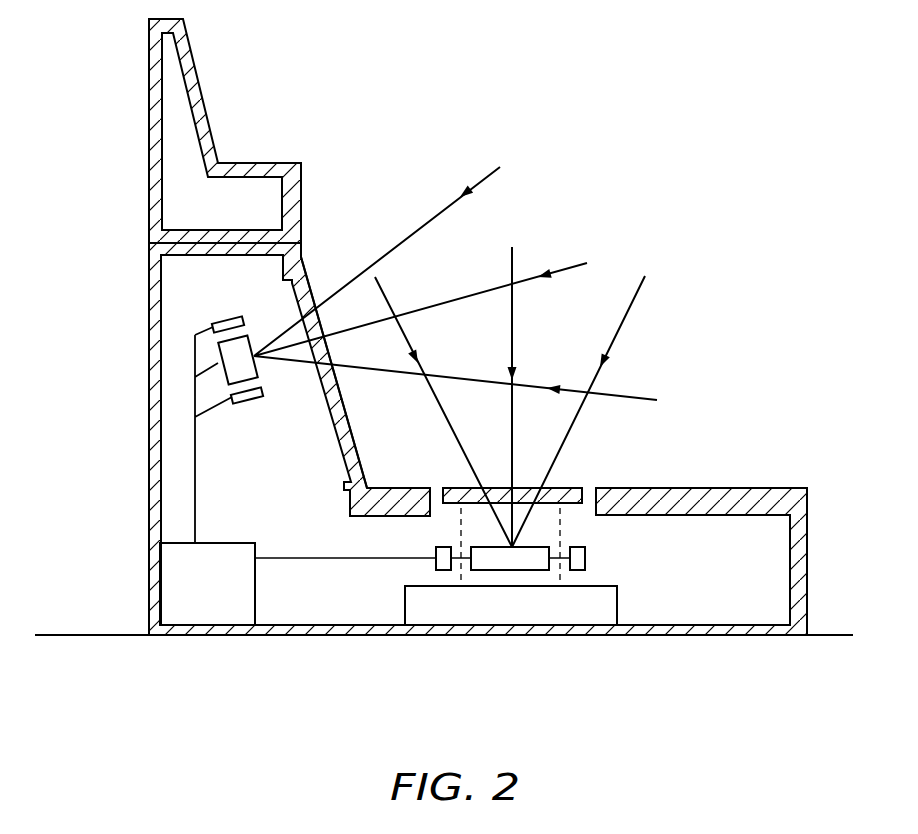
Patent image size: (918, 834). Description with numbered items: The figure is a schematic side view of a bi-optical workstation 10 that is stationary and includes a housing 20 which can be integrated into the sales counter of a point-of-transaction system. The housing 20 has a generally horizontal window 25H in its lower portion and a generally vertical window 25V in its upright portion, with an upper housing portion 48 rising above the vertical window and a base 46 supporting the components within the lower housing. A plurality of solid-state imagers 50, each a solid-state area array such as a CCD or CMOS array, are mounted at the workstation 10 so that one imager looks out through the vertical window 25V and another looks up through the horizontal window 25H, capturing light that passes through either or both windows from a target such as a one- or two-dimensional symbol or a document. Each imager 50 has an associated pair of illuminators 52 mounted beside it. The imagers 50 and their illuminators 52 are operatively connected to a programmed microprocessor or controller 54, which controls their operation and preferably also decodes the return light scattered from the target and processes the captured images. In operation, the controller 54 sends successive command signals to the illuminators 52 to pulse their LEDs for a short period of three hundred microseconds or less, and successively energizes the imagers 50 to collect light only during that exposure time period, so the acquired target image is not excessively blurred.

The workstation 10 is at (755, 391).
The housing 20 is at (783, 488).
The horizontal window 25H is at (560, 487).
The vertical window 25V is at (316, 292).
The base 46 is at (415, 607).
The upper housing portion 48 is at (149, 115).
The solid-state imager 50 is at (218, 350).
The illuminator 52 is at (225, 320).
The controller 54 is at (173, 577).